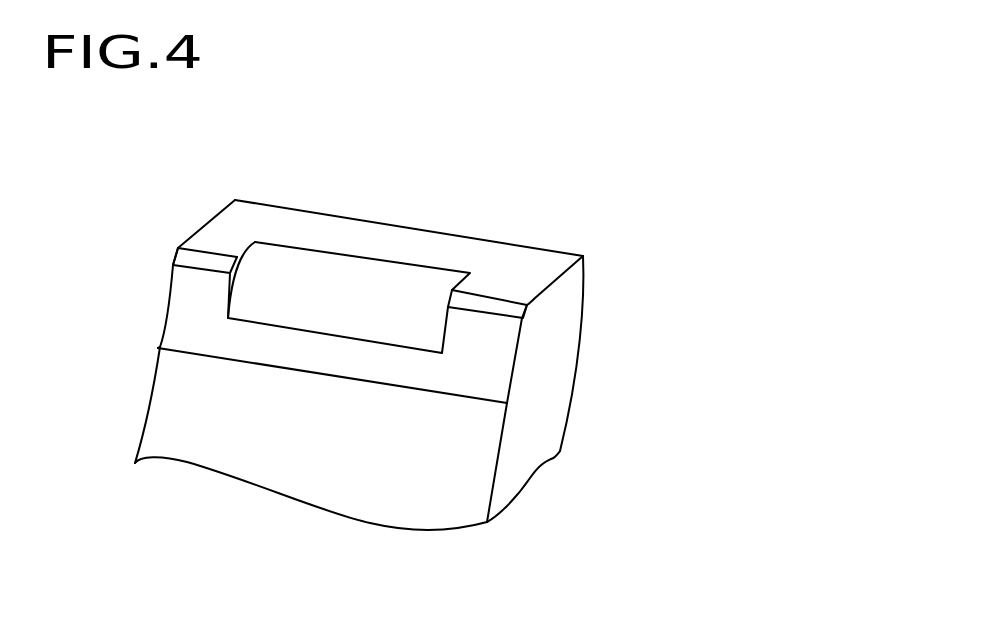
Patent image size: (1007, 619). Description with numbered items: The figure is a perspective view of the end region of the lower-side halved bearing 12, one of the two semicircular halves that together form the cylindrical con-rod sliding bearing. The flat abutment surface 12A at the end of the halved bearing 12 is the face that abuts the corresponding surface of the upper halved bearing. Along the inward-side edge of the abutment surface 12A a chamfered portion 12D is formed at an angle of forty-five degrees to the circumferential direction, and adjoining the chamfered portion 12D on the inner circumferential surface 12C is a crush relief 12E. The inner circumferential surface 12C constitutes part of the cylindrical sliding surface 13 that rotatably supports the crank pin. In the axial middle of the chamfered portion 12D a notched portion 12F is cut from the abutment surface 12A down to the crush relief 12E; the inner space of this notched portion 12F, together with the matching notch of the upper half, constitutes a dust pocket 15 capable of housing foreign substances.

The lower-side halved bearing 12 is at (543, 407).
The abutment surface 12A is at (523, 267).
The inner circumferential surface 12C is at (432, 473).
The chamfered portion 12D is at (218, 277).
The crush relief 12E is at (483, 363).
The notched portion 12F is at (407, 282).
The sliding surface 13 is at (322, 457).
The dust pocket 15 is at (310, 278).